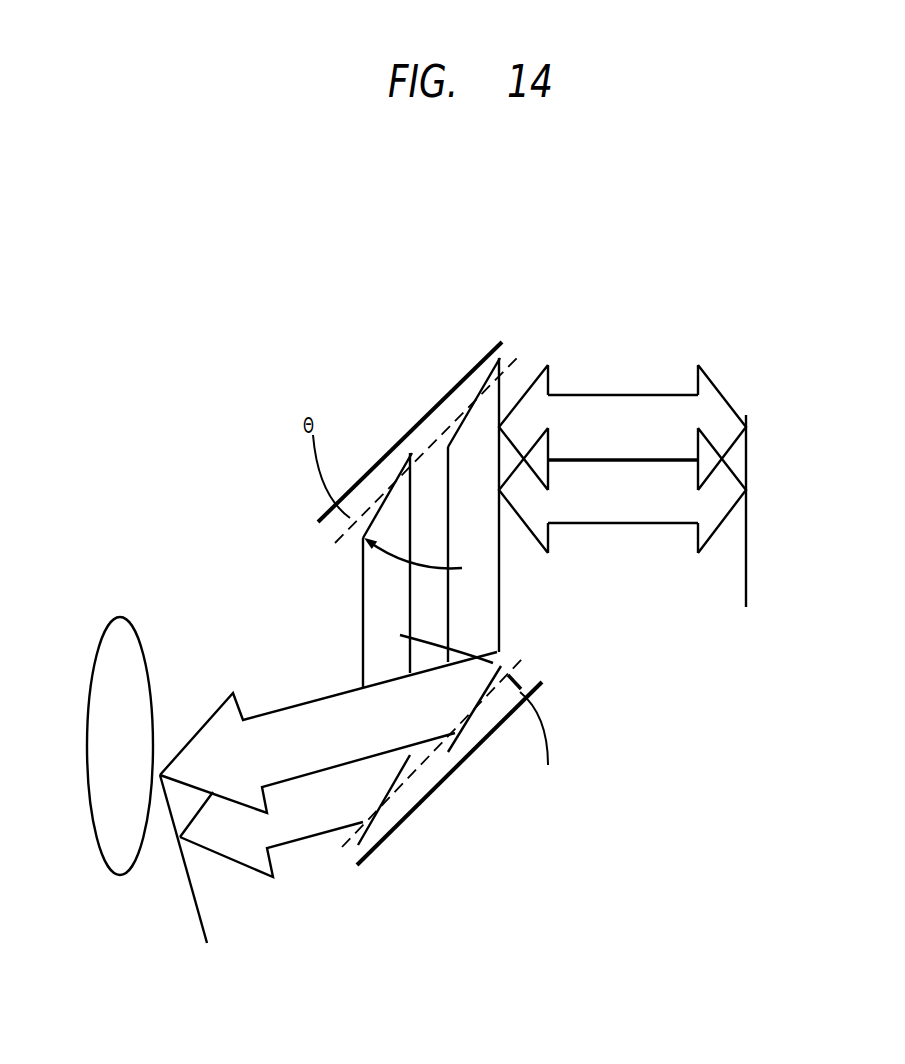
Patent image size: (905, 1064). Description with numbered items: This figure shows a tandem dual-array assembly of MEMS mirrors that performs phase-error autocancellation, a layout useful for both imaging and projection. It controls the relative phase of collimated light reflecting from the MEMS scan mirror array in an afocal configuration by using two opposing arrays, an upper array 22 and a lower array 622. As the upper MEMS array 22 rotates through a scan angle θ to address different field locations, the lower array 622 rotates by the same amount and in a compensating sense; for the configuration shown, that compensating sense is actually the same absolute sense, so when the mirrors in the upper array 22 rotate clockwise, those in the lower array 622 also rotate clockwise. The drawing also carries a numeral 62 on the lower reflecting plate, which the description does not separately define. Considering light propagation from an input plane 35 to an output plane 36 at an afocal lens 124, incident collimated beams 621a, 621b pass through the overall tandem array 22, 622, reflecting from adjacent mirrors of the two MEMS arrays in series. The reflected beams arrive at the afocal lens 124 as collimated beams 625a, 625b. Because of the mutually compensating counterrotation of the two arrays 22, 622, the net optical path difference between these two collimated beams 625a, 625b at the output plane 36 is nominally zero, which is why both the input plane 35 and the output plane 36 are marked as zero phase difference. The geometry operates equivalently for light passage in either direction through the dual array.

The upper MEMS array 22 is at (507, 350).
The incident collimated beam 621a is at (692, 417).
The incident collimated beam 621b is at (717, 510).
The input plane 35 is at (746, 568).
The lower MEMS array 622 is at (527, 672).
The second reflecting plate 62 is at (347, 858).
The collimated beam 625a is at (327, 720).
The collimated beam 625b is at (288, 827).
The afocal lens 124 is at (97, 698).
The output plane 36 is at (197, 910).